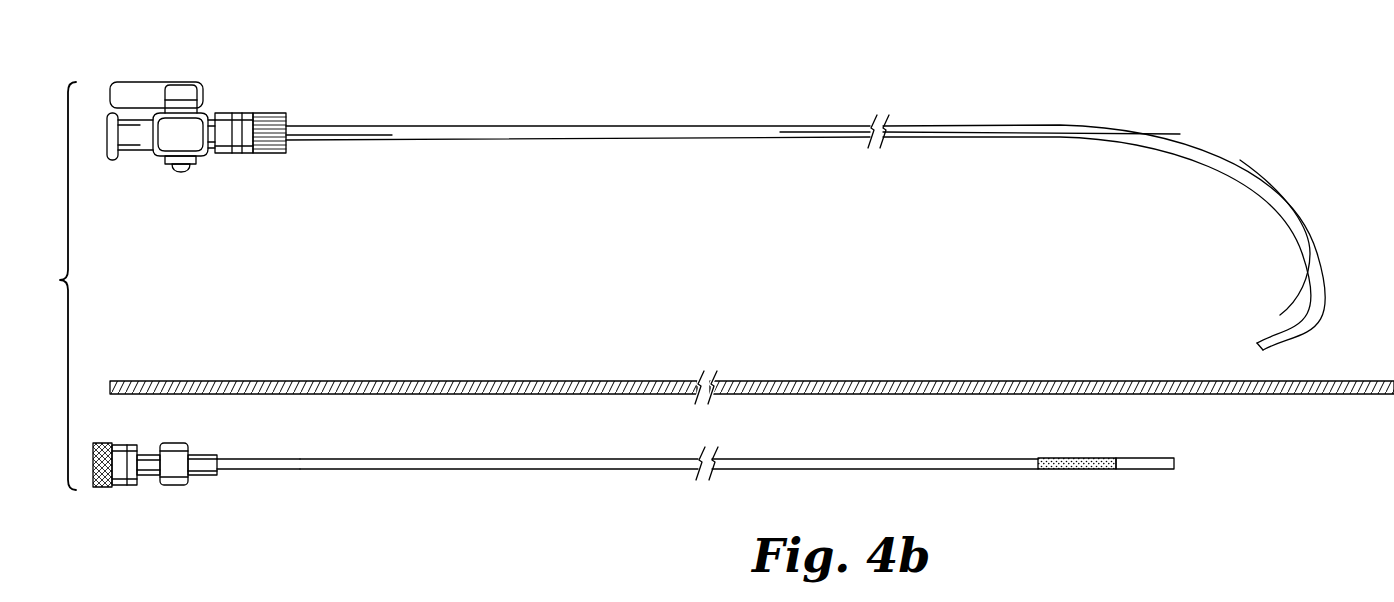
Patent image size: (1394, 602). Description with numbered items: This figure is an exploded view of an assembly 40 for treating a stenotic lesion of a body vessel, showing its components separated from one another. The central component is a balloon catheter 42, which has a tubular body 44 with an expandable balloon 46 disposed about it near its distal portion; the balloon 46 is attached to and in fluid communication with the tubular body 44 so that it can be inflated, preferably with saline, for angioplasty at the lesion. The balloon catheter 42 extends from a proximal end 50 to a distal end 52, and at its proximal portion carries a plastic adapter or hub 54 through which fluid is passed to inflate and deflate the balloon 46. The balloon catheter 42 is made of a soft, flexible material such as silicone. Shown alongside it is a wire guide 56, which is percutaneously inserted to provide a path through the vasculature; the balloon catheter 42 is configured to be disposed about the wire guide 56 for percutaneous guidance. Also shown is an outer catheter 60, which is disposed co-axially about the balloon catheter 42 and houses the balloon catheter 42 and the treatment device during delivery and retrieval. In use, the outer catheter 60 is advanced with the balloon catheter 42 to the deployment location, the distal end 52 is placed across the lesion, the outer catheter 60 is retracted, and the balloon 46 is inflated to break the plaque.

The assembly 40 is at (250, 52).
The balloon catheter 42 is at (380, 459).
The tubular body 44 is at (287, 460).
The expandable balloon 46 is at (1077, 458).
The proximal end 50 is at (225, 468).
The distal end 52 is at (1140, 458).
The hub 54 is at (173, 470).
The wire guide 56 is at (562, 380).
The outer catheter 60 is at (713, 126).